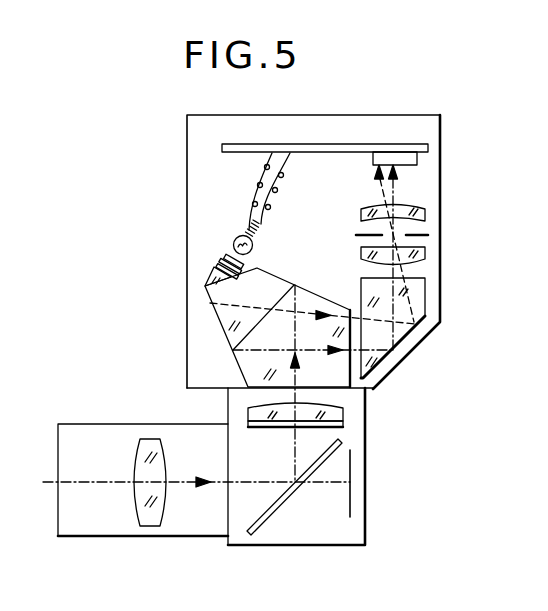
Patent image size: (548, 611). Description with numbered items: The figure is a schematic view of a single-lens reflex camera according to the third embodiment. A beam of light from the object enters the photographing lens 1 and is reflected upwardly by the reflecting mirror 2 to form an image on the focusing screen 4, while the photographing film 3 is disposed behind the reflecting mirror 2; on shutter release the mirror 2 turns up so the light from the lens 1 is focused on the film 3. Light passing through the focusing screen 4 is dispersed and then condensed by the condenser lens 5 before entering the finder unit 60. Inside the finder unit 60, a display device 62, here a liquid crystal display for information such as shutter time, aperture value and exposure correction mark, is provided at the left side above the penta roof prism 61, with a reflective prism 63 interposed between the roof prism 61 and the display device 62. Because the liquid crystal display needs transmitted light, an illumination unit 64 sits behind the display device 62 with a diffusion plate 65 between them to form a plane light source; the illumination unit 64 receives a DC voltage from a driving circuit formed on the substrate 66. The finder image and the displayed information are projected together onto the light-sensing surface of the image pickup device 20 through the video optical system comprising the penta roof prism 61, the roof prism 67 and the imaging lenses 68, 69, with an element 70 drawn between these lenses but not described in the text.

The photographing lens 1 is at (150, 526).
The reflecting mirror 2 is at (257, 532).
The photographing film 3 is at (350, 508).
The focusing screen 4 is at (345, 427).
The condenser lens 5 is at (345, 412).
The image pickup device 20 is at (414, 164).
The finder unit 60 is at (178, 160).
The penta roof prism 61 is at (226, 336).
The display device 62 is at (217, 262).
The reflective prism 63 is at (207, 281).
The illumination unit 64 is at (236, 240).
The diffusion plate 65 is at (224, 256).
The substrate 66 is at (316, 153).
The roof prism 67 is at (427, 293).
The imaging lens 68 is at (424, 256).
The imaging lens 69 is at (425, 209).
The aperture stop 70 is at (429, 235).